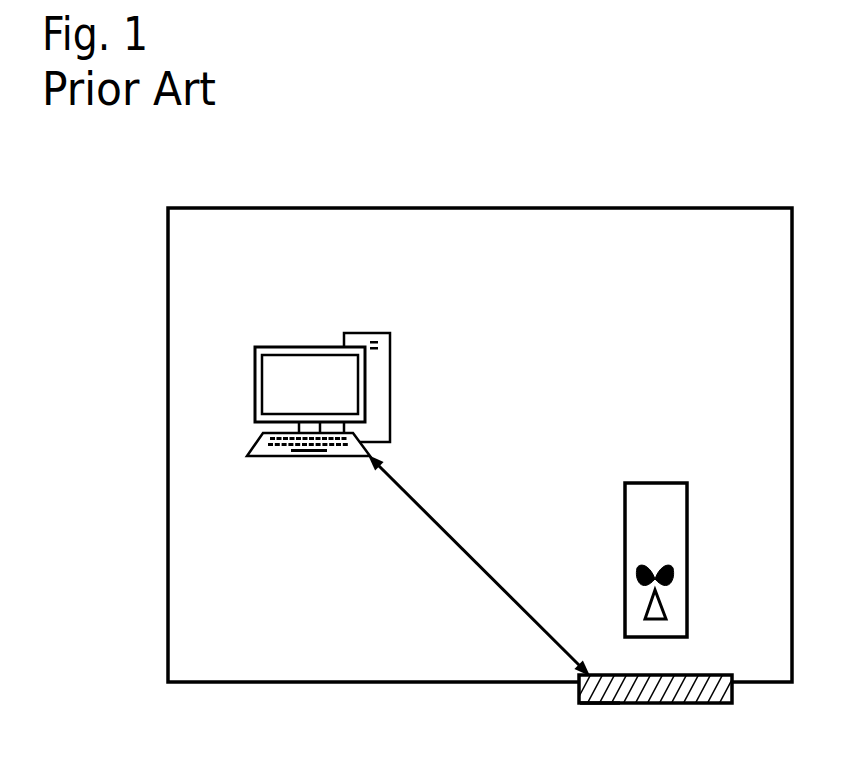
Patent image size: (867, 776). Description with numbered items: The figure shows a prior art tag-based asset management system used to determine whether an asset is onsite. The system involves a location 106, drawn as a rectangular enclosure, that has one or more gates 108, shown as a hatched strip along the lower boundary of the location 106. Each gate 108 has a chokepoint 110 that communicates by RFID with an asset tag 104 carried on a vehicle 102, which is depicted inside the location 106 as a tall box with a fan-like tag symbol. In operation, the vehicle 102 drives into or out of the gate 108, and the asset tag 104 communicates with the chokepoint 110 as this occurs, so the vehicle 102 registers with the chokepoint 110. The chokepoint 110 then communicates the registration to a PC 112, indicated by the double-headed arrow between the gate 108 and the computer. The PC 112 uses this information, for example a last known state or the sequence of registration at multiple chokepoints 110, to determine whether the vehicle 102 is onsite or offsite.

The vehicle 102 is at (670, 483).
The asset tag 104 is at (662, 568).
The location 106 is at (625, 208).
The gate 108 is at (657, 703).
The chokepoint 110 is at (618, 703).
The PC 112 is at (392, 392).